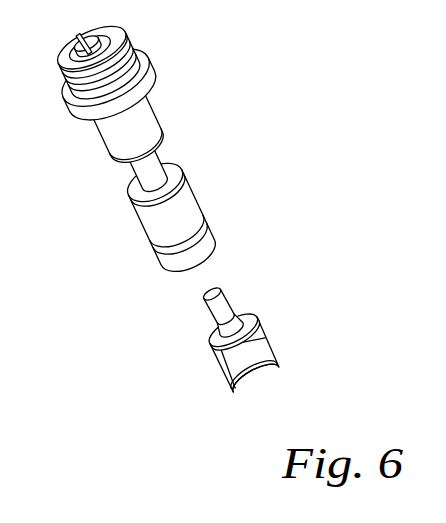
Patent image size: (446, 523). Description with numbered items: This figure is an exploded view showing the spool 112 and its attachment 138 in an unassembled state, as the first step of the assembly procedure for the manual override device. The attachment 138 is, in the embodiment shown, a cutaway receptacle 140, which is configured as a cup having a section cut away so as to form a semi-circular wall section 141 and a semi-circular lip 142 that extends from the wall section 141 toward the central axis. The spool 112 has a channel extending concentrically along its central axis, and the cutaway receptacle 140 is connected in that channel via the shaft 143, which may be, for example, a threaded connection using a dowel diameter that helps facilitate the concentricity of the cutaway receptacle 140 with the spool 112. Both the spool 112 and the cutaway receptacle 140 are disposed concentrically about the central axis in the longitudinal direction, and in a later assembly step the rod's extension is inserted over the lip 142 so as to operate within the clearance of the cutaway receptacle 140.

The spool 112 is at (182, 84).
The attachment 138 is at (308, 316).
The cutaway receptacle 140 is at (308, 316).
The semi-circular wall section 141 is at (246, 353).
The semi-circular lip 142 is at (250, 377).
The shaft 143 is at (218, 294).